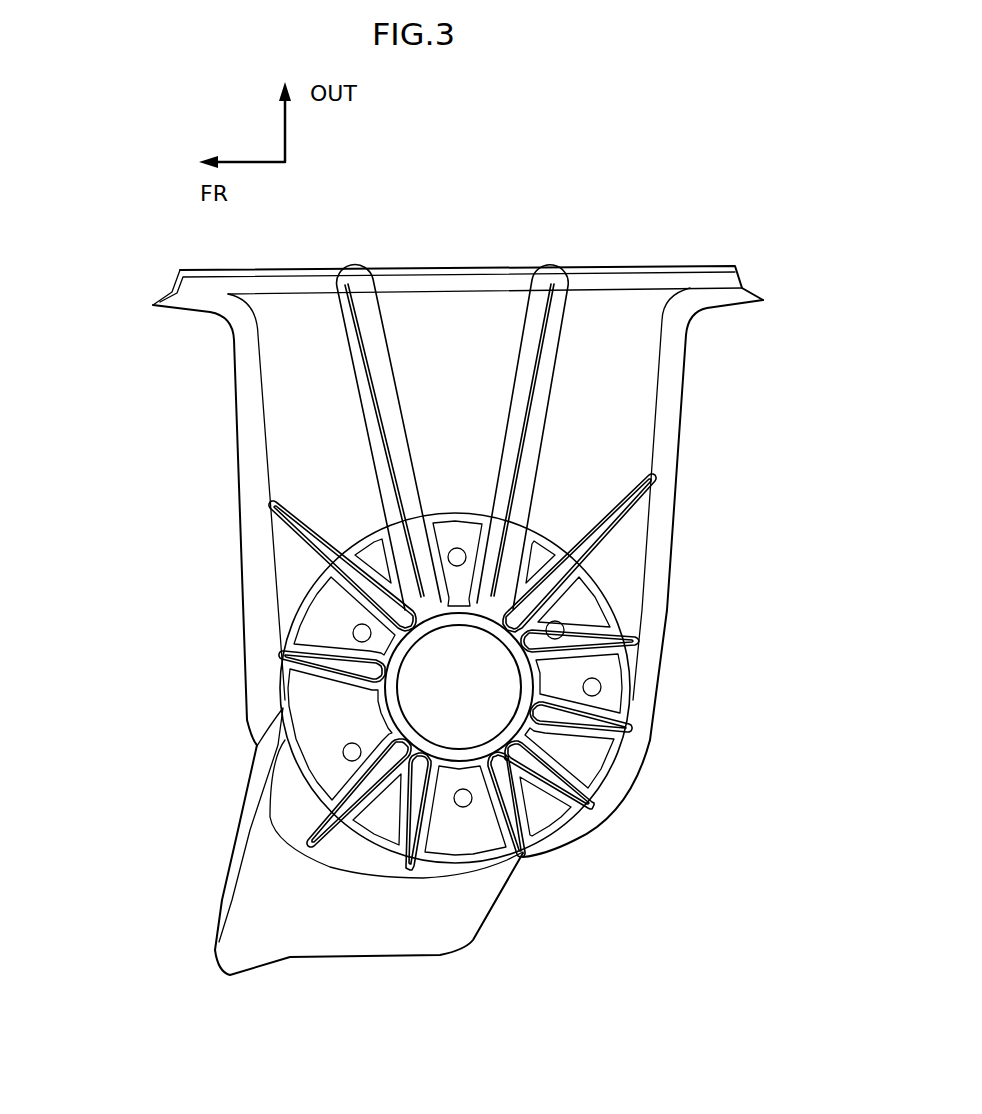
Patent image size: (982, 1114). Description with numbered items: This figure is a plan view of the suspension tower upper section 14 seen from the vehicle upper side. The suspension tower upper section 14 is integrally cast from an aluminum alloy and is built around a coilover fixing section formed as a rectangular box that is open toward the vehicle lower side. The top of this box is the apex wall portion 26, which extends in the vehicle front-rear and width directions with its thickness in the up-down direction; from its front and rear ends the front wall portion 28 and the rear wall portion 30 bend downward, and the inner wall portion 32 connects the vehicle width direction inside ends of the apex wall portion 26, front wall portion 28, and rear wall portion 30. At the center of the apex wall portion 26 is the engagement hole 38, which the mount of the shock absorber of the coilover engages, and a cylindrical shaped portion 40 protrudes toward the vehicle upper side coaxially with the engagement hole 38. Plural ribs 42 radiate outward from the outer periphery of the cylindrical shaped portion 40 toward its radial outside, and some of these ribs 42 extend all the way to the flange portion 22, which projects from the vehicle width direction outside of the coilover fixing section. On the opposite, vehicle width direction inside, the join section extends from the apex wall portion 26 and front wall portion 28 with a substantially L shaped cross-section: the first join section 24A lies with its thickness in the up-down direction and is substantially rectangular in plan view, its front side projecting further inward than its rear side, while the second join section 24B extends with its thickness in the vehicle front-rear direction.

The suspension tower upper section 14 is at (157, 522).
The flange portion 22 is at (610, 284).
The front wall portion 28 is at (234, 440).
The rear wall portion 30 is at (673, 515).
The apex wall portion 26 is at (588, 606).
The ribs 42 is at (520, 452).
The cylindrical shaped portion 40 is at (420, 628).
The engagement hole 38 is at (410, 707).
The first join section 24A is at (355, 937).
The second join section 24B is at (215, 882).
The inner wall portion 32 is at (545, 865).